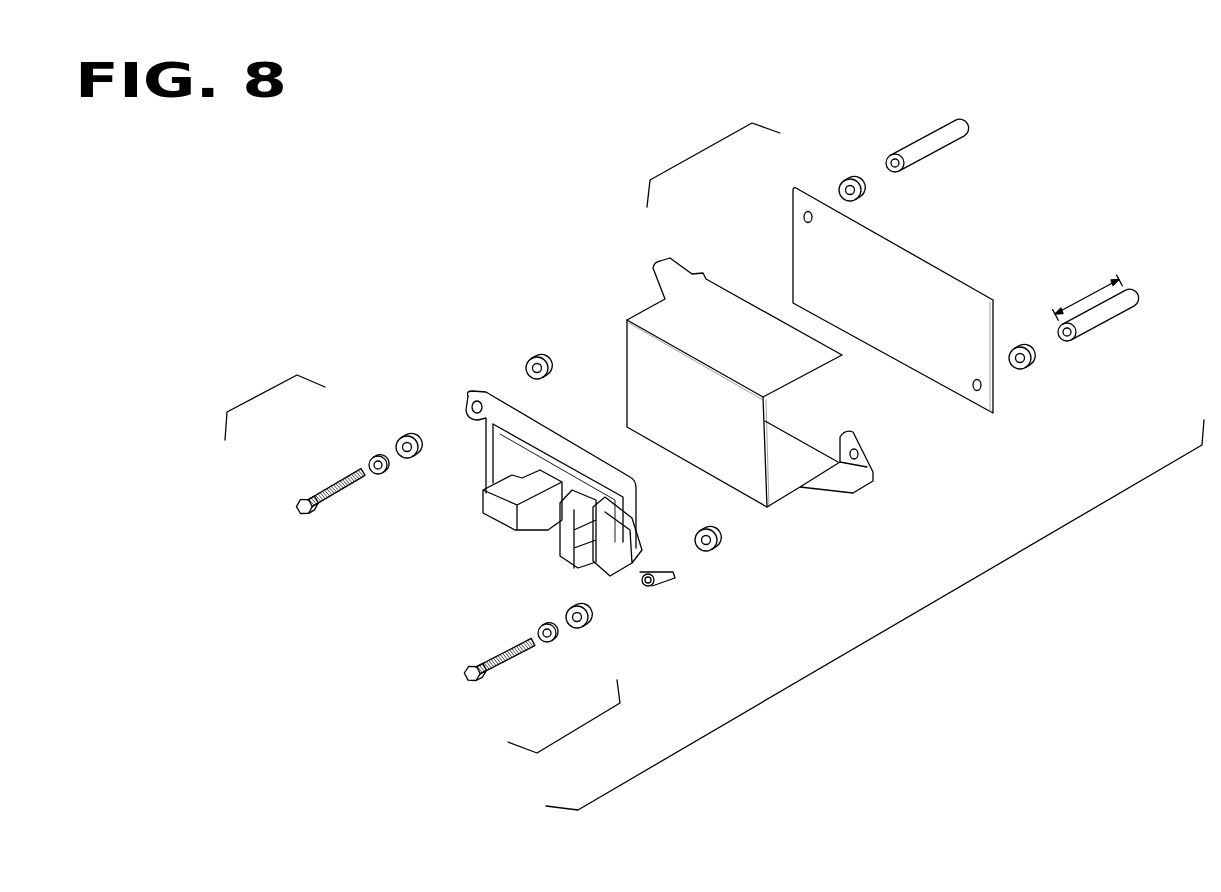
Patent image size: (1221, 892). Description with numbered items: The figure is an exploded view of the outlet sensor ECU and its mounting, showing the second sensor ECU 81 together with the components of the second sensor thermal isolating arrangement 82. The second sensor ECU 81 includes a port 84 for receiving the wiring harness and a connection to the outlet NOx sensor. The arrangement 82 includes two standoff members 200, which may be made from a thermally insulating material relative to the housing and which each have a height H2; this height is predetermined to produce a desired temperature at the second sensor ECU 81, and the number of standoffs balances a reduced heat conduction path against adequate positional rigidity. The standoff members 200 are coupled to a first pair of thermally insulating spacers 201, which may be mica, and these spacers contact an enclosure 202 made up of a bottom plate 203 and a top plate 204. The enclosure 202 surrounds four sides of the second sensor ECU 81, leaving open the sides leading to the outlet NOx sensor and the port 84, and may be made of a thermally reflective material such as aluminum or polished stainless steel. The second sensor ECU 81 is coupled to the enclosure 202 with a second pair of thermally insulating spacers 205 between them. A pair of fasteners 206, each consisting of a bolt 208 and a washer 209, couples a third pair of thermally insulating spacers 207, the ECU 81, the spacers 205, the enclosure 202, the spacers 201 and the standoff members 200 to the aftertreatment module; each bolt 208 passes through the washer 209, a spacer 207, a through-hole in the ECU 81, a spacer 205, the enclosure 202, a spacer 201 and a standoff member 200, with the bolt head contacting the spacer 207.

The second sensor ECU 81 is at (468, 393).
The second sensor thermal isolating arrangement 82 is at (930, 604).
The port 84 is at (497, 523).
The standoff members 200 is at (913, 142).
The first pair of thermally insulating spacers 201 is at (848, 179).
The enclosure 202 is at (700, 152).
The bottom plate 203 is at (792, 189).
The top plate 204 is at (692, 273).
The second pair of thermally insulating spacers 205 is at (530, 358).
The pair of fasteners 206 is at (253, 398).
The third pair of thermally insulating spacers 207 is at (399, 438).
The bolt 208 is at (300, 497).
The washer 209 is at (372, 457).
The height H2 is at (1080, 300).